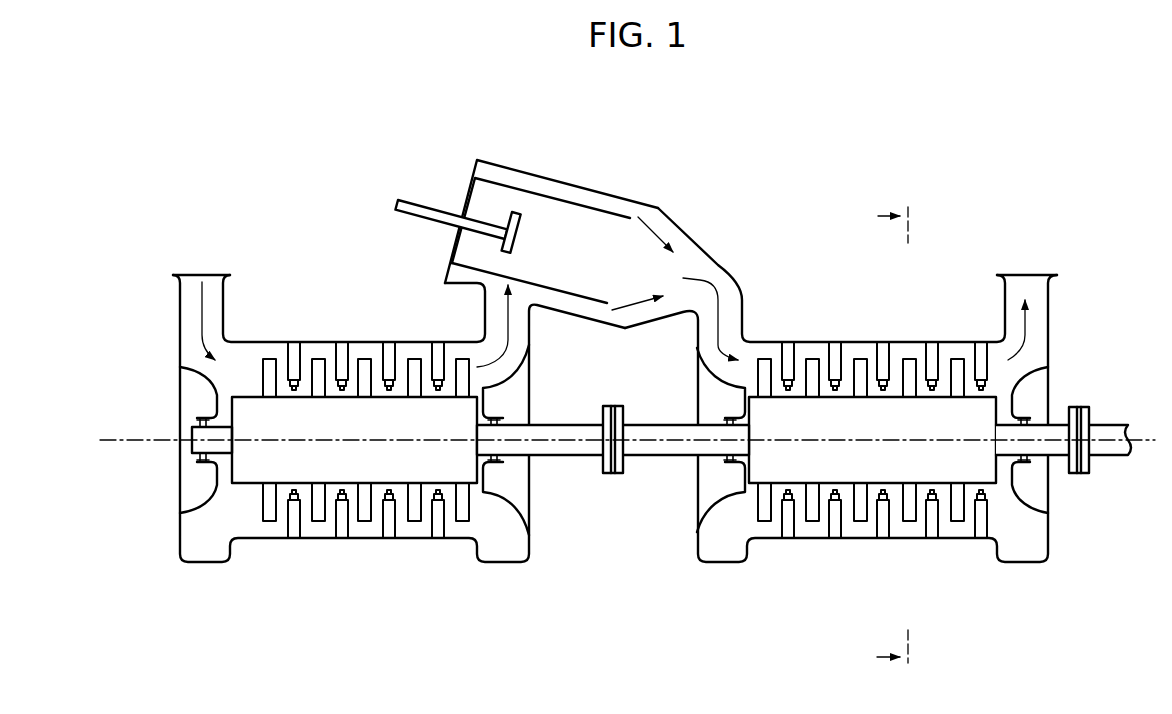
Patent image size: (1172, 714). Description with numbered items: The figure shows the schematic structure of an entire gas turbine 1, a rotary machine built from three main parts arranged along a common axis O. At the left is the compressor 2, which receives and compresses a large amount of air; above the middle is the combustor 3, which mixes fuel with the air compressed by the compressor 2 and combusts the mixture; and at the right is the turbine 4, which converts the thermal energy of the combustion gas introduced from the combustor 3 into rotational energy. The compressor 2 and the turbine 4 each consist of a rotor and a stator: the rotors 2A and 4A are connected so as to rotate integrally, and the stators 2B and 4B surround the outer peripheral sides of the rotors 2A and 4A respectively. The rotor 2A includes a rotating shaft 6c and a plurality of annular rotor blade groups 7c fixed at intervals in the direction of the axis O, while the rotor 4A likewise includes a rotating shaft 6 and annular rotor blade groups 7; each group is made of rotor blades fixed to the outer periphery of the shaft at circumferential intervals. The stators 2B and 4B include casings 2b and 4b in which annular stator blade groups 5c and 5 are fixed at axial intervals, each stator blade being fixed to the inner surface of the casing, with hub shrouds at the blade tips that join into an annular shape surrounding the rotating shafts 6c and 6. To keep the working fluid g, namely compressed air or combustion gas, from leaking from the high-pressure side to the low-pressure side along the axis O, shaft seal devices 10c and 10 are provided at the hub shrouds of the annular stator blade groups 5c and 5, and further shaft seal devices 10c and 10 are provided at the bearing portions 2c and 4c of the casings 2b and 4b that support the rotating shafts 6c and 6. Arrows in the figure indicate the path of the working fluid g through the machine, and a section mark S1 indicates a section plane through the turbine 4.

The gas turbine 1 is at (986, 190).
The compressor 2 is at (206, 582).
The rotor 2A is at (513, 605).
The stator 2B is at (437, 277).
The casing 2b is at (423, 340).
The bearing portion 2c is at (215, 385).
The combustor 3 is at (566, 168).
The turbine 4 is at (1029, 582).
The rotor 4A is at (960, 605).
The stator 4B is at (968, 277).
The casing 4b is at (807, 340).
The bearing portion 4c is at (745, 385).
The annular stator blade group 5 is at (932, 344).
The annular stator blade group 5c is at (389, 344).
The rotating shaft 6 is at (753, 487).
The rotating shaft 6c is at (473, 487).
The annular rotor blade group 7 is at (764, 522).
The annular rotor blade group 7c is at (270, 522).
The shaft seal device 10 is at (933, 391).
The shaft seal device 10c is at (390, 391).
The working fluid g is at (202, 320).
The axis O is at (145, 437).
The section line S1 is at (894, 438).